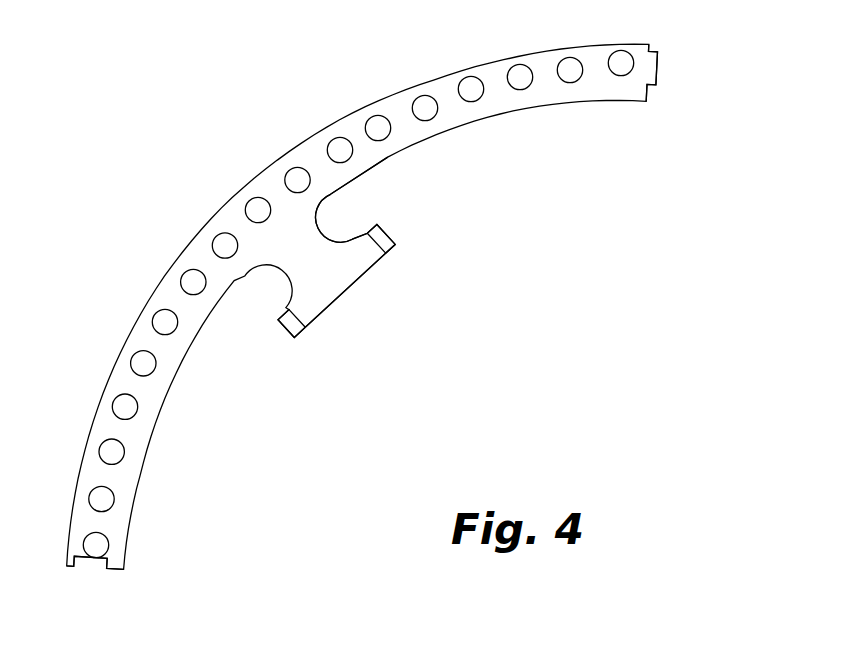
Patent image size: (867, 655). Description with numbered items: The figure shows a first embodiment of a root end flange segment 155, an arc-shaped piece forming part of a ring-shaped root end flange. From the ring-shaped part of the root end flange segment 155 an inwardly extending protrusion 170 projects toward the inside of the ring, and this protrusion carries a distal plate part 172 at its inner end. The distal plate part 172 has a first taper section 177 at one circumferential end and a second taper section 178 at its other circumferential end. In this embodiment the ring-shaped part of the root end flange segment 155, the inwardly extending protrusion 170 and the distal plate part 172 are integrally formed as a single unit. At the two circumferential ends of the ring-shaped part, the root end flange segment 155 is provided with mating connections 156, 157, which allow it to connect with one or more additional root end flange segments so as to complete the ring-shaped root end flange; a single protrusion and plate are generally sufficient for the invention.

The root end flange segment 155 is at (478, 124).
The mating connection 156 is at (659, 62).
The mating connection 157 is at (92, 560).
The inwardly extending protrusion 170 is at (339, 230).
The distal plate part 172 is at (335, 274).
The first taper section 177 is at (397, 251).
The second taper section 178 is at (288, 341).